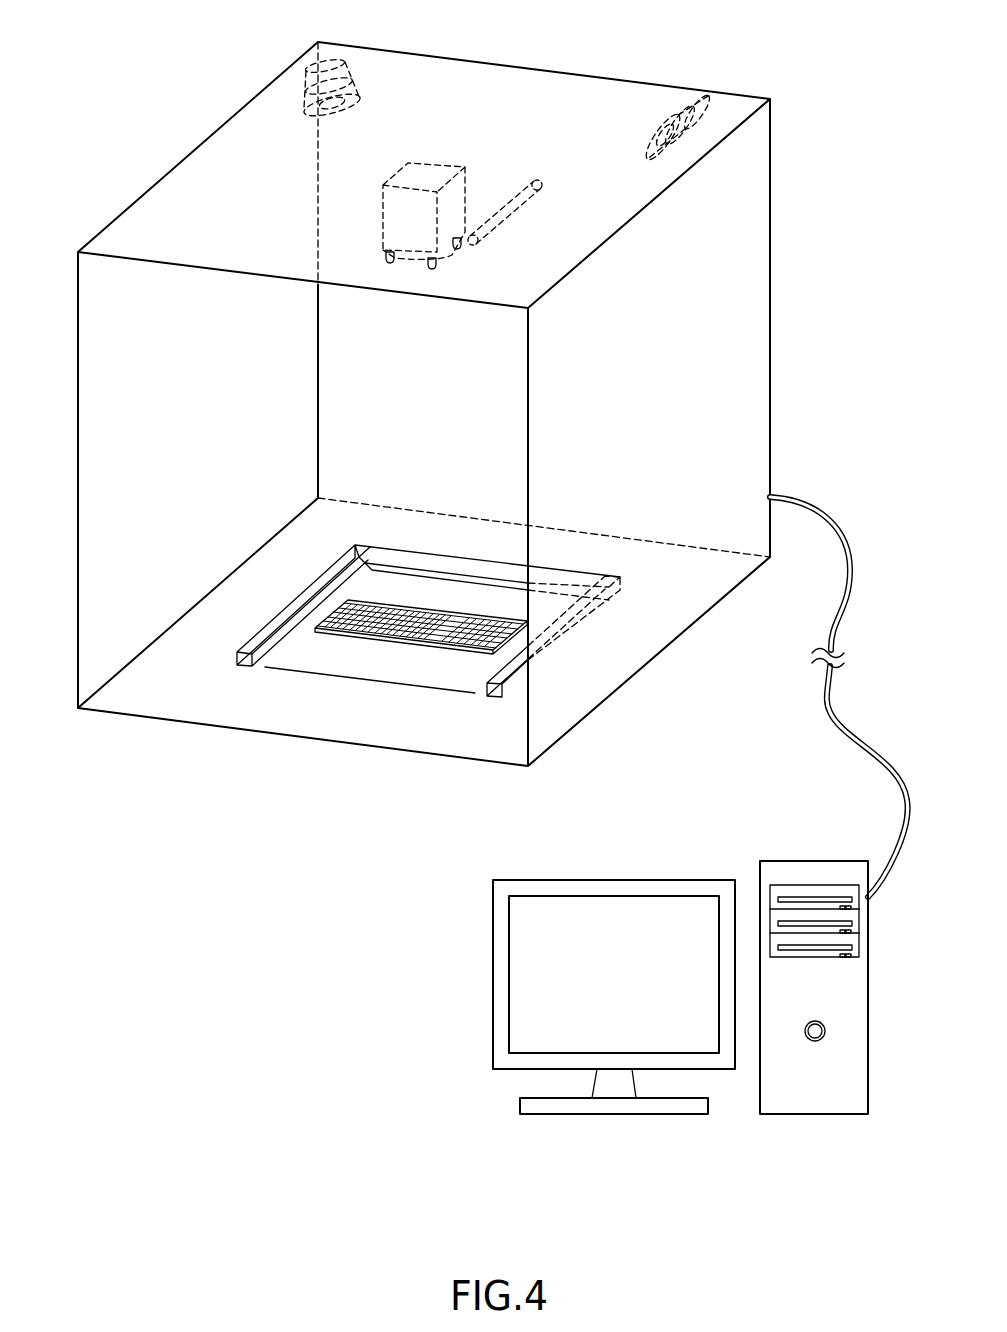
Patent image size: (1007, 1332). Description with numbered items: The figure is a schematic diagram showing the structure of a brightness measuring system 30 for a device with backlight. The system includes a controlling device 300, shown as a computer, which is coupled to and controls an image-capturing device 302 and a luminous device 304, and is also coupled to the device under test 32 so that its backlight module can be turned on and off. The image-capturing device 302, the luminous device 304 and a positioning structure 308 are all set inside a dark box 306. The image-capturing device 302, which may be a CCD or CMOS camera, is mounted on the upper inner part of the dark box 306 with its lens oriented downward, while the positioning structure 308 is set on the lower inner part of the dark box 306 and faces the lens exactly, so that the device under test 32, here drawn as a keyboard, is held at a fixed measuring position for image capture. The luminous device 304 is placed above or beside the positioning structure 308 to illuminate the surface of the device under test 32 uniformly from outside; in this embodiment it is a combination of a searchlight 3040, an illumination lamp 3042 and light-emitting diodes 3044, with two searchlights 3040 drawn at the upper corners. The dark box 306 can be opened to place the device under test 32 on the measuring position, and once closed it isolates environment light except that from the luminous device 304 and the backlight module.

The brightness measuring system 30 is at (97, 150).
The controlling device 300 is at (866, 1133).
The image-capturing device 302 is at (425, 178).
The luminous device 304 is at (503, 378).
The searchlight 3040 is at (318, 63).
The illumination lamp 3042 is at (507, 217).
The light-emitting diodes 3044 is at (390, 263).
The dark box 306 is at (770, 201).
The positioning structure 308 is at (295, 597).
The device under test 32 is at (390, 640).